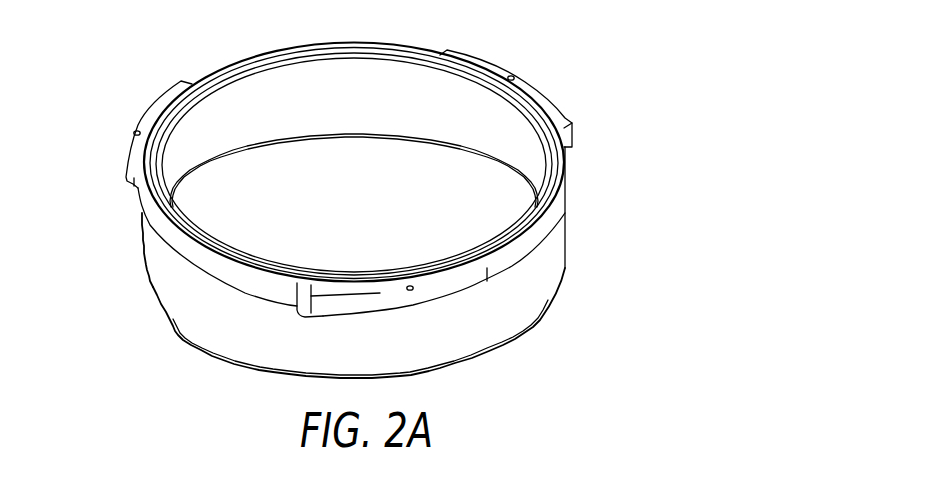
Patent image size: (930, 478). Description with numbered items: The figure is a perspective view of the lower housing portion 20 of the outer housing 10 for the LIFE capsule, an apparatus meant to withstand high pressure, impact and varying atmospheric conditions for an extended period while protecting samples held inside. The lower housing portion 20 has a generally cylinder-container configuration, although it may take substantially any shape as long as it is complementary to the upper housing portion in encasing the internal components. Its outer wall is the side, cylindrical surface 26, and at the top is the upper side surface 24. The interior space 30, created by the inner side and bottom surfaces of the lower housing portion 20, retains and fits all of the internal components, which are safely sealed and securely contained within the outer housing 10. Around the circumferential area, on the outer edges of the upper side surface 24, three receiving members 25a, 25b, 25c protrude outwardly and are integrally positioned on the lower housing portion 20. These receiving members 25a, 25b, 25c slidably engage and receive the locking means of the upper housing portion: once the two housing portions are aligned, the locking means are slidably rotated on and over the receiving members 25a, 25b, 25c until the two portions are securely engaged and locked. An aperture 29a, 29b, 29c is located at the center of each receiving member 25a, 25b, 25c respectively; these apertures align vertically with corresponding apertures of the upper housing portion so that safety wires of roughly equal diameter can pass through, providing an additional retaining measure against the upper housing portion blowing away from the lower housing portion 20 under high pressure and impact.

The outer housing 10 is at (82, 232).
The lower housing portion 20 is at (233, 50).
The upper side surface 24 is at (264, 287).
The receiving member 25a is at (133, 165).
The receiving member 25b is at (373, 292).
The receiving member 25c is at (543, 103).
The side cylindrical surface 26 is at (282, 343).
The aperture 29a is at (136, 129).
The aperture 29b is at (414, 288).
The aperture 29c is at (511, 73).
The interior space 30 is at (370, 217).